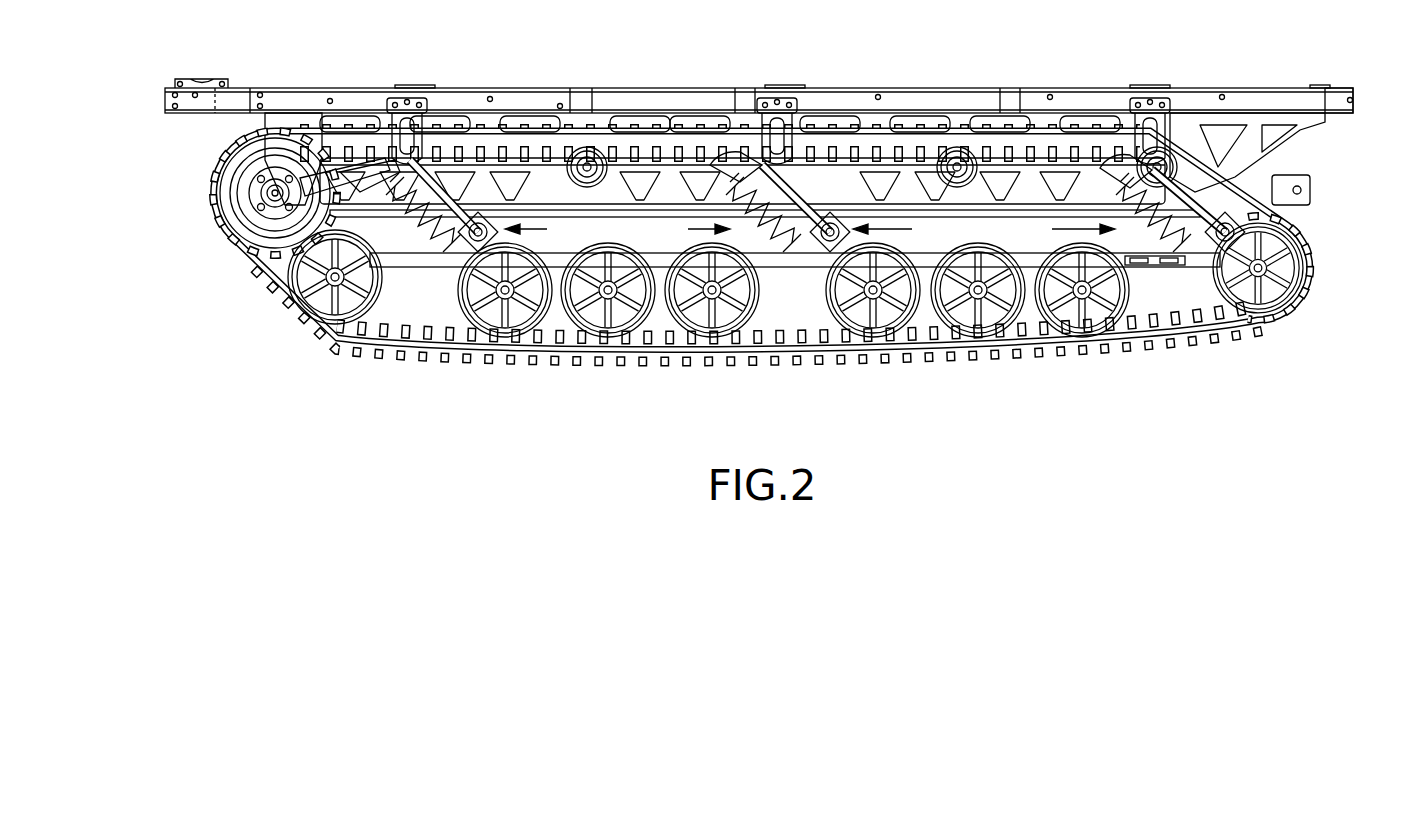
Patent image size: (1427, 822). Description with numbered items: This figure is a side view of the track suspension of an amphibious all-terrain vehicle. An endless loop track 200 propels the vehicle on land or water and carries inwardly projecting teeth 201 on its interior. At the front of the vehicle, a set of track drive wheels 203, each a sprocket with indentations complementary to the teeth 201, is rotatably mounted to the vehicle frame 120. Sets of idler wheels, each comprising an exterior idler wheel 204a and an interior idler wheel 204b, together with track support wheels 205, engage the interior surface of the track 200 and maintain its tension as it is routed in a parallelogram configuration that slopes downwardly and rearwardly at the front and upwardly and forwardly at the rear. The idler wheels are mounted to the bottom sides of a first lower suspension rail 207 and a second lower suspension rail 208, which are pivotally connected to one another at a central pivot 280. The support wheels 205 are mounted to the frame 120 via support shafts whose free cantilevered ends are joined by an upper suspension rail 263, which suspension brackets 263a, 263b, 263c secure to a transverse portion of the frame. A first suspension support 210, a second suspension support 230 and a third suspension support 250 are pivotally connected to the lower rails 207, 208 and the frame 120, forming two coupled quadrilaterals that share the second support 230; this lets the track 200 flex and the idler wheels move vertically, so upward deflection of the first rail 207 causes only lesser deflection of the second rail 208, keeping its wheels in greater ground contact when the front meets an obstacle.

The vehicle frame 120 is at (1300, 137).
The endless loop track 200 is at (452, 362).
The inwardly projecting teeth 201 is at (408, 338).
The track drive wheels 203 is at (255, 197).
The exterior idler wheel 204a is at (283, 318).
The interior idler wheel 204b is at (513, 335).
The track support wheels 205 is at (592, 147).
The first lower suspension rail 207 is at (393, 300).
The second lower suspension rail 208 is at (1145, 277).
The first suspension support 210 is at (554, 230).
The second suspension support 230 is at (798, 230).
The third suspension support 250 is at (1054, 230).
The upper suspension rail 263 is at (712, 160).
The suspension bracket 263a is at (413, 102).
The suspension bracket 263b is at (785, 100).
The suspension bracket 263c is at (1143, 100).
The central pivot 280 is at (825, 245).